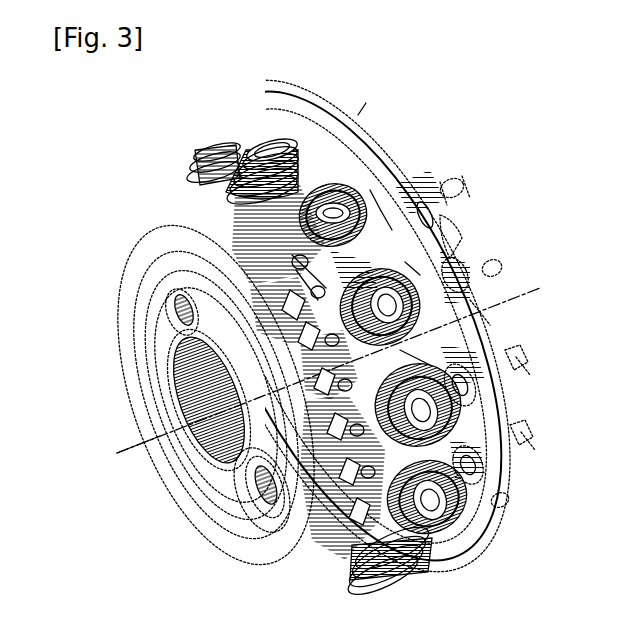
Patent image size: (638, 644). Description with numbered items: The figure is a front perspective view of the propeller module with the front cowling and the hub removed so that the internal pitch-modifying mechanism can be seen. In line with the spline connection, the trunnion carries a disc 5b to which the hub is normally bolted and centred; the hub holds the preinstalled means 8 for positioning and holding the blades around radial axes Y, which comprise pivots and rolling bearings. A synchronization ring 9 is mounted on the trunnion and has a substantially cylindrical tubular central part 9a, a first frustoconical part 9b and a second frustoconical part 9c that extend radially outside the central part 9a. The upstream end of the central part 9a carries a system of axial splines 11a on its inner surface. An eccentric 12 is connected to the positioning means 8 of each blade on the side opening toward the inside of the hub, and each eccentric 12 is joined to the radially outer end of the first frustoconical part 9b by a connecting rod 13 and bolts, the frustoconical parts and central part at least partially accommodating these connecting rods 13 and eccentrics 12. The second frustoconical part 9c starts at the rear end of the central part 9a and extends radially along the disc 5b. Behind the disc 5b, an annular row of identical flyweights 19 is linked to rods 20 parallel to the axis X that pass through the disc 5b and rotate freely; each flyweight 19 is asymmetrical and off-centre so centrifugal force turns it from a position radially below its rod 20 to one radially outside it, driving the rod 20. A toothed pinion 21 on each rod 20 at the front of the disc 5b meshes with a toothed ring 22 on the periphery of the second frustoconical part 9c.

The disc 5b is at (380, 177).
The means for positioning and holding the blades 8 is at (323, 258).
The synchronization ring 9 is at (107, 533).
The central part 9a is at (258, 437).
The first frustoconical part 9b is at (203, 490).
The second frustoconical part 9c is at (428, 350).
The axial splines 11a is at (197, 390).
The eccentric 12 is at (348, 268).
The connecting rod 13 is at (307, 307).
The flyweight 19 is at (471, 257).
The rod 20 is at (458, 190).
The toothed pinion 21 is at (388, 205).
The toothed ring 22 is at (412, 270).
The axis X is at (112, 457).
The radial axes Y is at (364, 122).